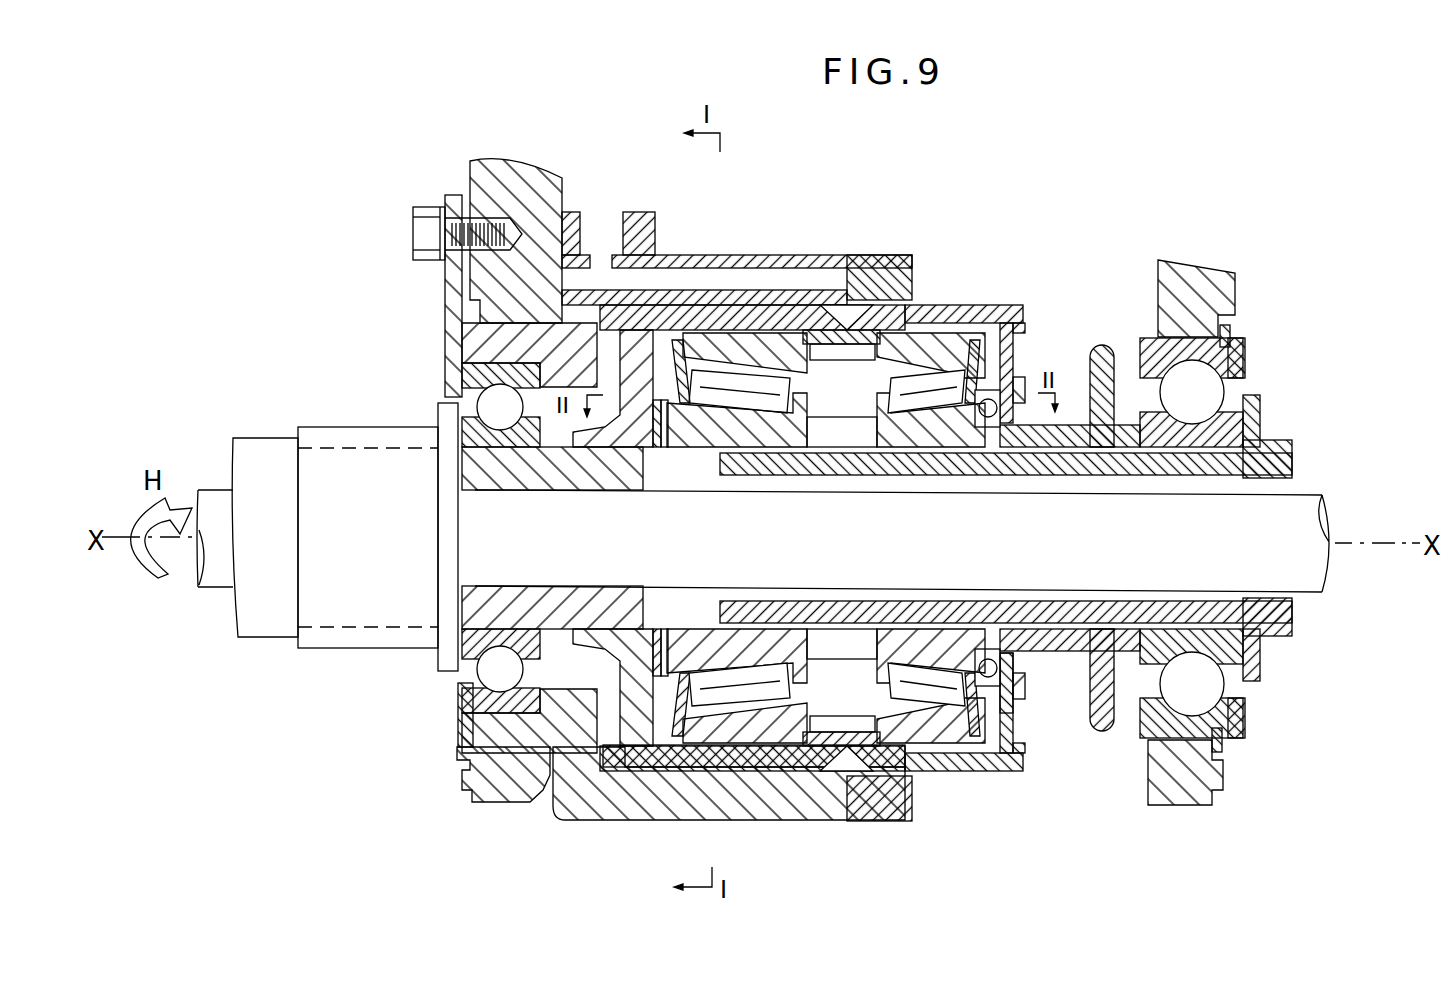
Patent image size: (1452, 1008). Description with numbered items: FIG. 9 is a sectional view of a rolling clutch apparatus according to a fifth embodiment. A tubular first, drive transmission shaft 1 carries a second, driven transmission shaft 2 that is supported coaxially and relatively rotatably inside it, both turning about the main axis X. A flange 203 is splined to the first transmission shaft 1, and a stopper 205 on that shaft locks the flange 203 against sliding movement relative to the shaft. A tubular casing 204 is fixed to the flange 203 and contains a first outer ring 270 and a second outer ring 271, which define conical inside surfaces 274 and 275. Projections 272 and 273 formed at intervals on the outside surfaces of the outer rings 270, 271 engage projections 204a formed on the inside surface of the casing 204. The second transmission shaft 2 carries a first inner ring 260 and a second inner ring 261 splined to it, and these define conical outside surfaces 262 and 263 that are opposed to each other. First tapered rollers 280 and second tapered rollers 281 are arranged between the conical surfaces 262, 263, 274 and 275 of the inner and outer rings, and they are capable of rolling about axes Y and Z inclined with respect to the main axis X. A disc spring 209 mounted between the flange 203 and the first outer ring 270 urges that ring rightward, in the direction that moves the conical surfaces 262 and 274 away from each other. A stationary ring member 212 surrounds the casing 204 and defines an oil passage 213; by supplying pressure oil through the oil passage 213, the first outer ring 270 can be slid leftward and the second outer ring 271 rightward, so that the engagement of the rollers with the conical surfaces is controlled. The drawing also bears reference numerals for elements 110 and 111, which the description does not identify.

The first drive transmission shaft 1 is at (262, 437).
The second driven transmission shaft 2 is at (1277, 440).
The housing ring 110 is at (1007, 733).
The lug 111 is at (997, 703).
The flange 203 is at (610, 669).
The tubular casing 204 is at (1027, 310).
The projections 204a is at (453, 288).
The stopper 205 is at (597, 327).
The disc spring 209 is at (645, 745).
The stationary ring member 212 is at (890, 258).
The oil passage 213 is at (833, 277).
The first inner ring 260 is at (752, 493).
The second inner ring 261 is at (937, 455).
The conical outside surface 262 is at (738, 437).
The conical outside surface 263 is at (955, 412).
The first outer ring 270 is at (772, 343).
The second outer ring 271 is at (923, 332).
The projections 272 is at (738, 340).
The projections 273 is at (955, 320).
The conical inside surface 274 is at (712, 378).
The conical inside surface 275 is at (945, 382).
The first tapered rollers 280 is at (727, 383).
The second tapered rollers 281 is at (905, 405).